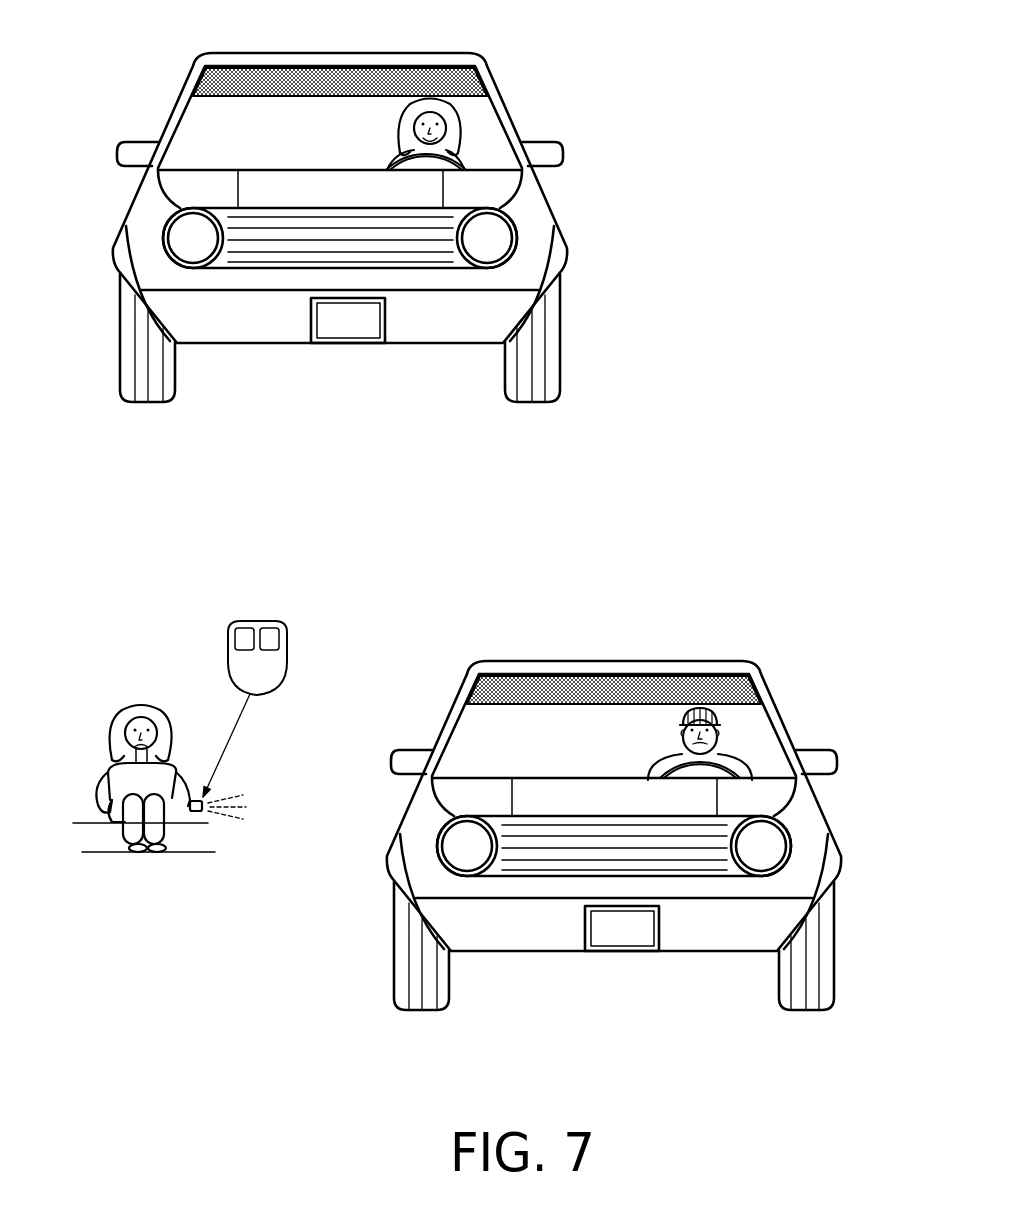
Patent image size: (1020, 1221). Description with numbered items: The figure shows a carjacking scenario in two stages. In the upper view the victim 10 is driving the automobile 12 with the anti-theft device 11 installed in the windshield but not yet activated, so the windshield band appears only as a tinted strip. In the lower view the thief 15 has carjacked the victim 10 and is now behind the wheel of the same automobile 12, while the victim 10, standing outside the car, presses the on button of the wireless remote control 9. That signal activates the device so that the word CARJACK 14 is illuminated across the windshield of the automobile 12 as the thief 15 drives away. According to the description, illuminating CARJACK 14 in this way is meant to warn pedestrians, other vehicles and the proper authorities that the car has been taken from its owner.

The wireless remote control 9 is at (282, 617).
The victim 10 is at (460, 130).
The device 11 is at (350, 80).
The automobile 12 is at (540, 232).
The CARJACK word 14 is at (627, 680).
The thief 15 is at (733, 738).